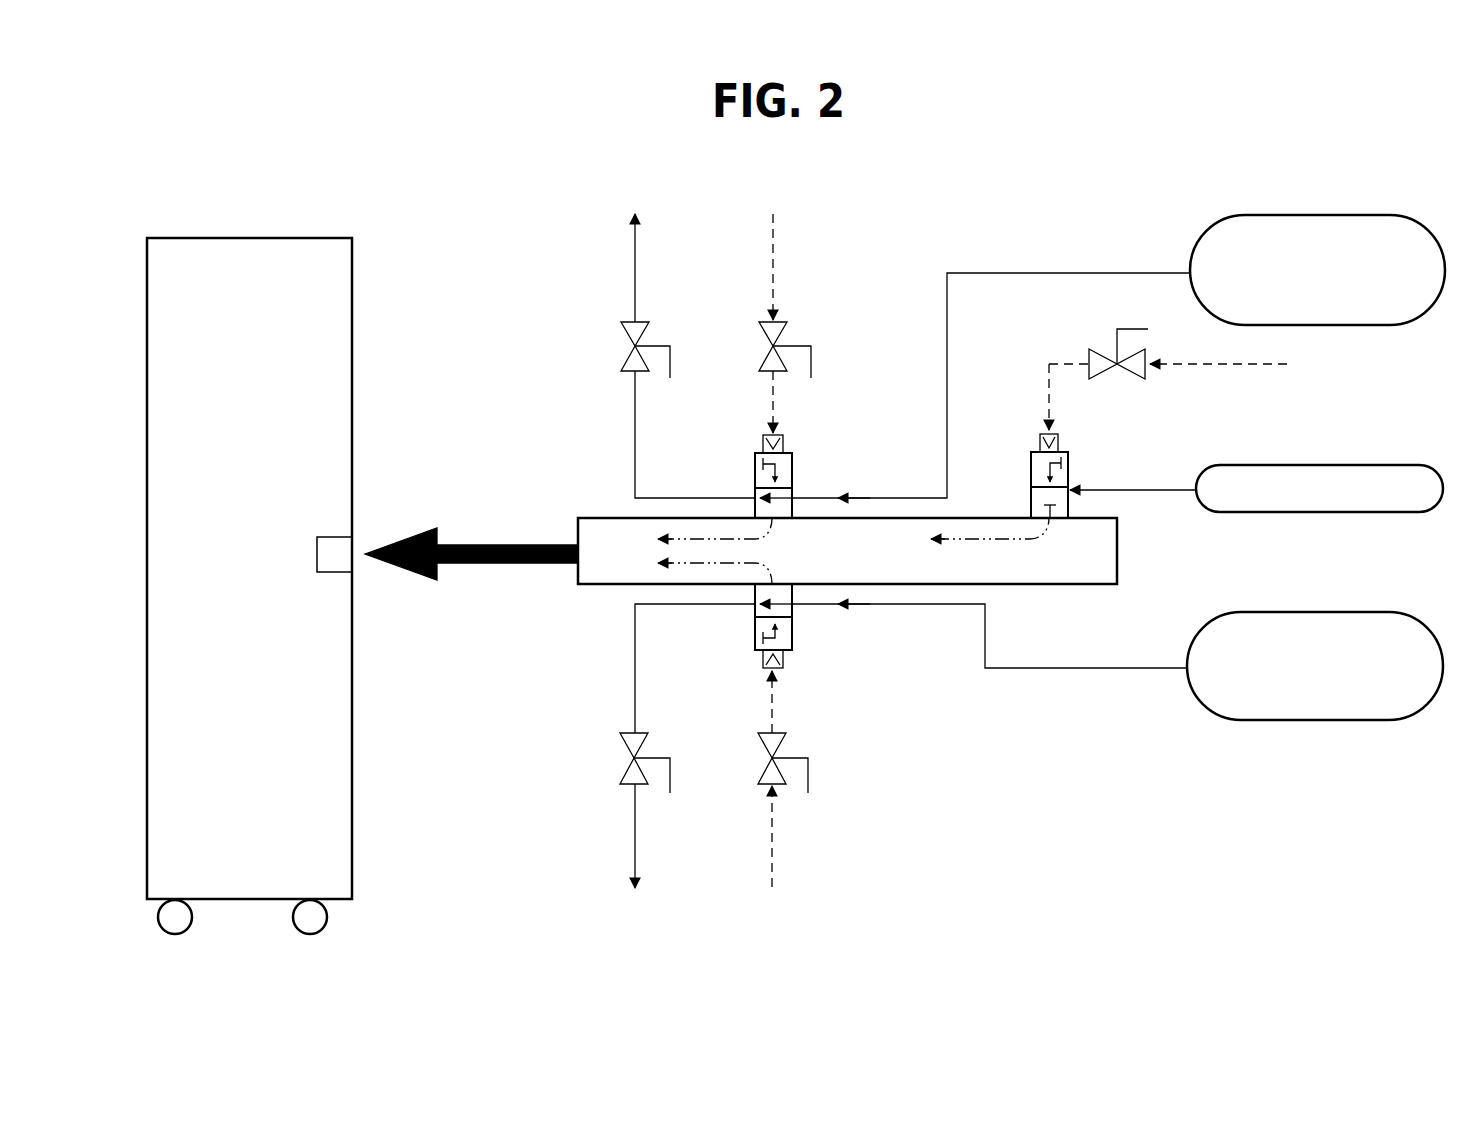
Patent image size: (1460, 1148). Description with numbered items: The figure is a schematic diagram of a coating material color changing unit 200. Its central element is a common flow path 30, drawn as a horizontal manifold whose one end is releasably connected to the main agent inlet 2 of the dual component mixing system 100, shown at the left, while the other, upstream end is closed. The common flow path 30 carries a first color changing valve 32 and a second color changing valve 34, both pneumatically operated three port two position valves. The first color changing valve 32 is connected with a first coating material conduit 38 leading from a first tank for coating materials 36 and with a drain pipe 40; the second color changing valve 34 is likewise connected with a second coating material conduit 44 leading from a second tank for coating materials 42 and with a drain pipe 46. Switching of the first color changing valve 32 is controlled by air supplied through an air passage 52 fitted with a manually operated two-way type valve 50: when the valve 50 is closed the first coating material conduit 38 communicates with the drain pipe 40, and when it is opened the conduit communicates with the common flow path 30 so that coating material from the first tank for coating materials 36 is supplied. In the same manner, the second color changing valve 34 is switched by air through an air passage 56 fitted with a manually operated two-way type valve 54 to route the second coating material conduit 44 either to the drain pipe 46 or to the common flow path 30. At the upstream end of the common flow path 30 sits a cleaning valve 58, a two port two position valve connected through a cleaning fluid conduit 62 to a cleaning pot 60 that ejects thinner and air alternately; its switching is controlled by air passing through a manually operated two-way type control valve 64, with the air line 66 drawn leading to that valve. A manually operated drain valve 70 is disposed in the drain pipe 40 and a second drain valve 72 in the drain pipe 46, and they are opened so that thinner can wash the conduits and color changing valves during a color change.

The main agent inlet 2 is at (334, 566).
The dual component mixing system 100 is at (366, 310).
The coating material color changing unit 200 is at (586, 290).
The common flow path 30 is at (612, 585).
The first color changing valve 32 is at (793, 470).
The second color changing valve 34 is at (793, 648).
The first tank for coating materials 36 is at (1333, 214).
The first coating material conduit 38 is at (1033, 272).
The drain pipe 40 is at (636, 440).
The second tank for coating materials 42 is at (1355, 611).
The second coating material conduit 44 is at (1137, 667).
The drain pipe 46 is at (634, 672).
The two-way type valve 50 is at (760, 338).
The air passage 52 is at (775, 247).
The two-way type valve 54 is at (758, 775).
The air passage 56 is at (774, 828).
The cleaning valve 58 is at (1069, 469).
The cleaning pot 60 is at (1340, 464).
The cleaning fluid conduit 62 is at (1163, 489).
The two-way type control valve 64 is at (1098, 356).
The pilot air line 66 is at (1193, 366).
The drain valve 70 is at (621, 340).
The second drain valve 72 is at (620, 745).